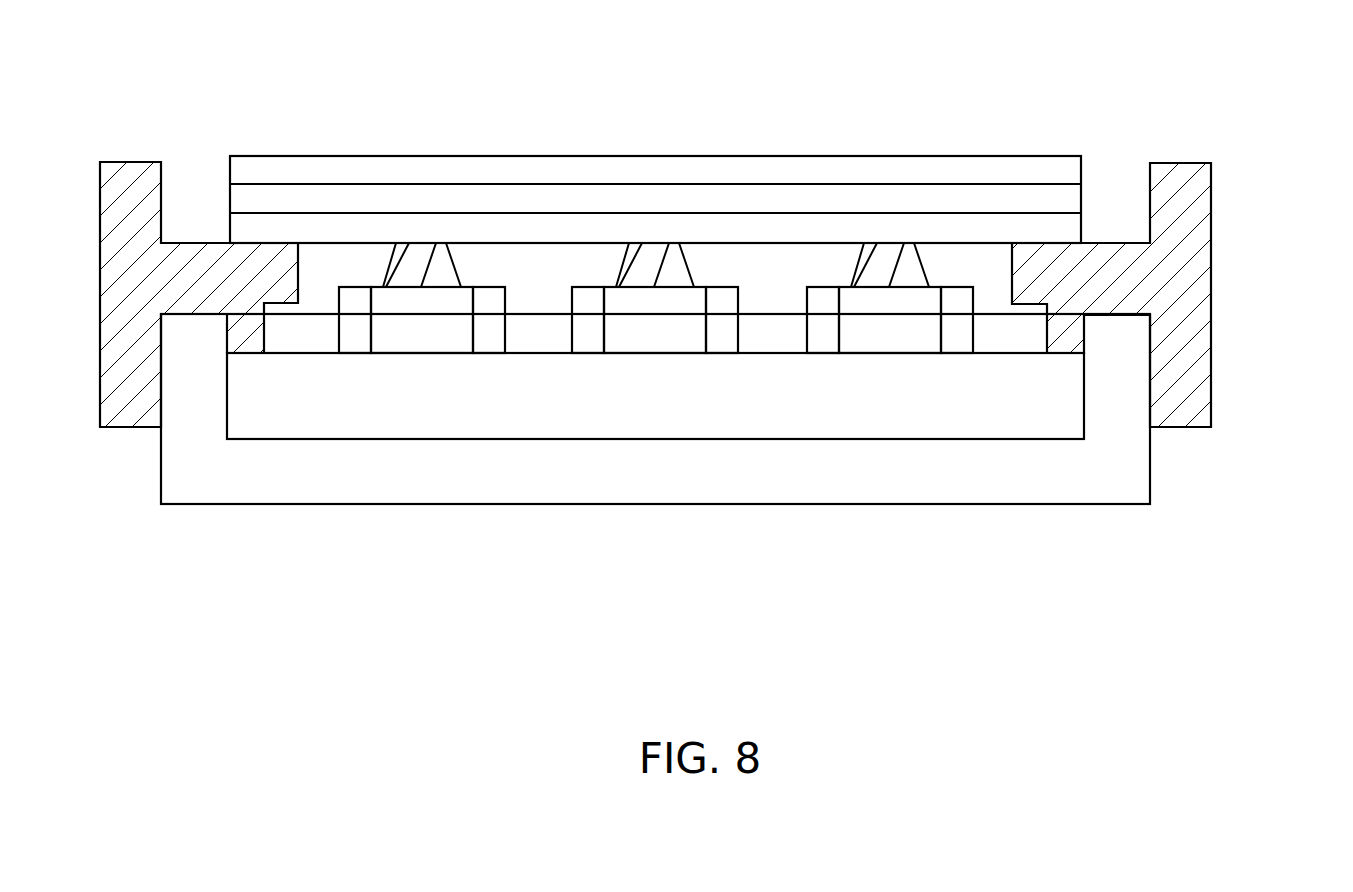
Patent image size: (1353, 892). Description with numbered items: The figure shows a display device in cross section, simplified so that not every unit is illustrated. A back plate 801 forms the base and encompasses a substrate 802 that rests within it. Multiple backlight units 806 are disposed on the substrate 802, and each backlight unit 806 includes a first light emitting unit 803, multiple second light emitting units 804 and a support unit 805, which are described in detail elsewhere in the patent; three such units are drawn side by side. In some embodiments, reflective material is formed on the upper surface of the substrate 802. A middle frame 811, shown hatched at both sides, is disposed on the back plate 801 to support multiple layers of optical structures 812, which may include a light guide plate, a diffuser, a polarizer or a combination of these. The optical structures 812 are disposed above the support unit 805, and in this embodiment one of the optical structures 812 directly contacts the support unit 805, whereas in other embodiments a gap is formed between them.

The back plate 801 is at (993, 480).
The substrate 802 is at (861, 418).
The first light emitting unit 803 is at (650, 340).
The second light emitting units 804 is at (588, 339).
The support unit 805 is at (622, 260).
The backlight units 806 is at (624, 441).
The middle frame 811 is at (1195, 293).
The optical structures 812 is at (1100, 242).